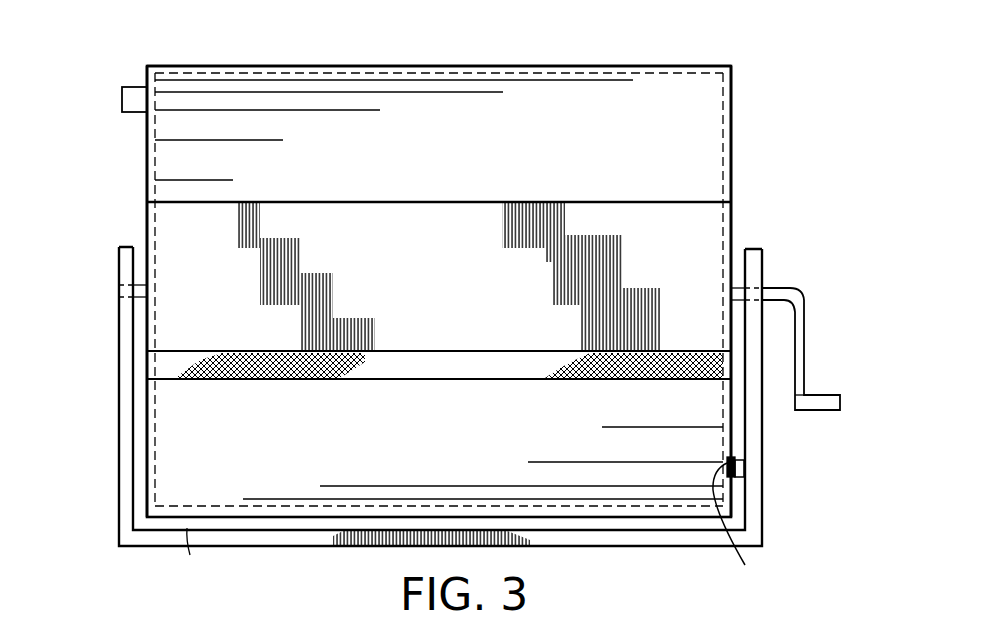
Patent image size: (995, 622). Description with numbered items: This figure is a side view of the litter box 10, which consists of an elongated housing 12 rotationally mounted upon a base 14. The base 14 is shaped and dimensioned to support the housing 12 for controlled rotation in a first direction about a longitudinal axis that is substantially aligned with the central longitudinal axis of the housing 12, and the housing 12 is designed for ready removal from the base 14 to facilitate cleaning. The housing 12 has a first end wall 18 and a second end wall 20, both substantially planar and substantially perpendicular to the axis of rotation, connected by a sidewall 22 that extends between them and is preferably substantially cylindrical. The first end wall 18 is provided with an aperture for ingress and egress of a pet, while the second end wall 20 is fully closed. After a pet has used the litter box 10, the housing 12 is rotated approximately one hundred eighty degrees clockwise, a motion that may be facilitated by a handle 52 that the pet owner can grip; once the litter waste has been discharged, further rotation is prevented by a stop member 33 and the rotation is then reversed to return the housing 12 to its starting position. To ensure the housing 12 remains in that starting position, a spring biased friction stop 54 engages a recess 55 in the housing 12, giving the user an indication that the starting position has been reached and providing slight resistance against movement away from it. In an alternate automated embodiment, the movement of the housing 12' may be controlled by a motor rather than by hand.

The litter box 10 is at (131, 61).
The elongated housing 12 is at (439, 40).
The housing 12' is at (358, 575).
The base 14 is at (650, 540).
The first end wall 18 is at (147, 152).
The second end wall 20 is at (731, 168).
The sidewall 22 is at (586, 65).
The stop member 33 is at (120, 101).
The handle 52 is at (818, 398).
The spring biased friction stop 54 is at (740, 480).
The recess 55 is at (741, 537).